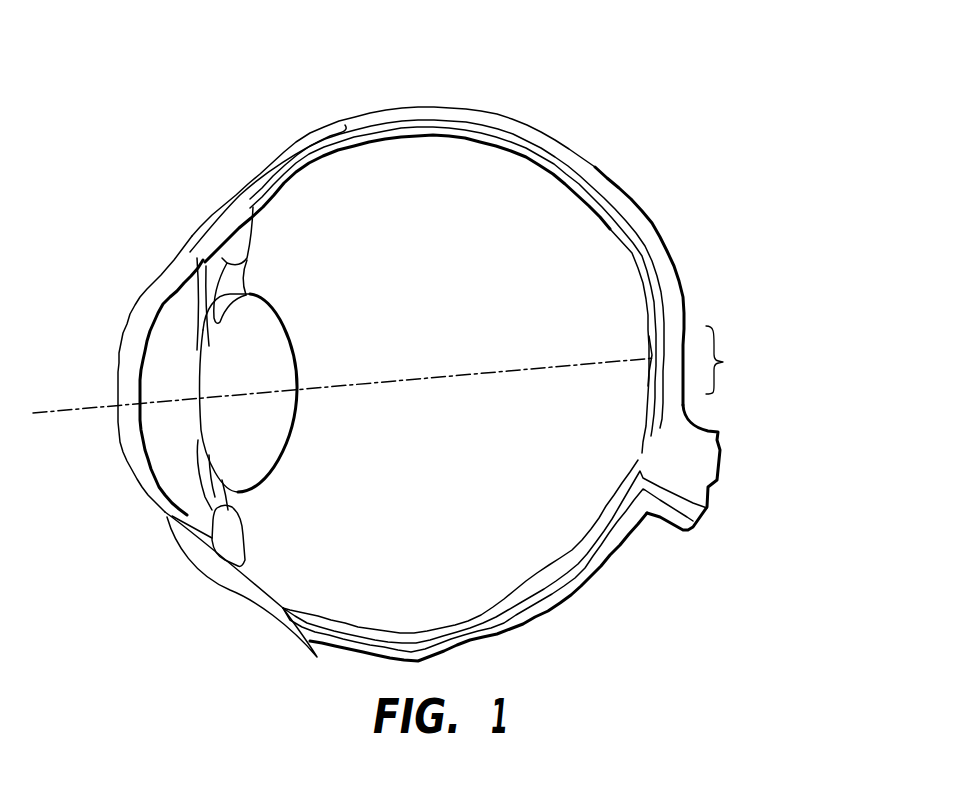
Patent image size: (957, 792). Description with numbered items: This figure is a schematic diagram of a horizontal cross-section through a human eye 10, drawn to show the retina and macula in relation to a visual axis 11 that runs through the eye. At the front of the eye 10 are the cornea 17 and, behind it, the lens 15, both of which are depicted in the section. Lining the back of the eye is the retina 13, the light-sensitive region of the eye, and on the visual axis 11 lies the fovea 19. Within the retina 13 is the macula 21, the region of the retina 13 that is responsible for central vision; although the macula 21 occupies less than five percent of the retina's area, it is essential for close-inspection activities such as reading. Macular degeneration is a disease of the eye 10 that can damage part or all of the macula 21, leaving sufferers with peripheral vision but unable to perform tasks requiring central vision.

The human eye 10 is at (542, 95).
The visual axis 11 is at (398, 383).
The retina 13 is at (548, 176).
The lens 15 is at (218, 348).
The cornea 17 is at (136, 468).
The fovea 19 is at (654, 358).
The macula 21 is at (726, 360).